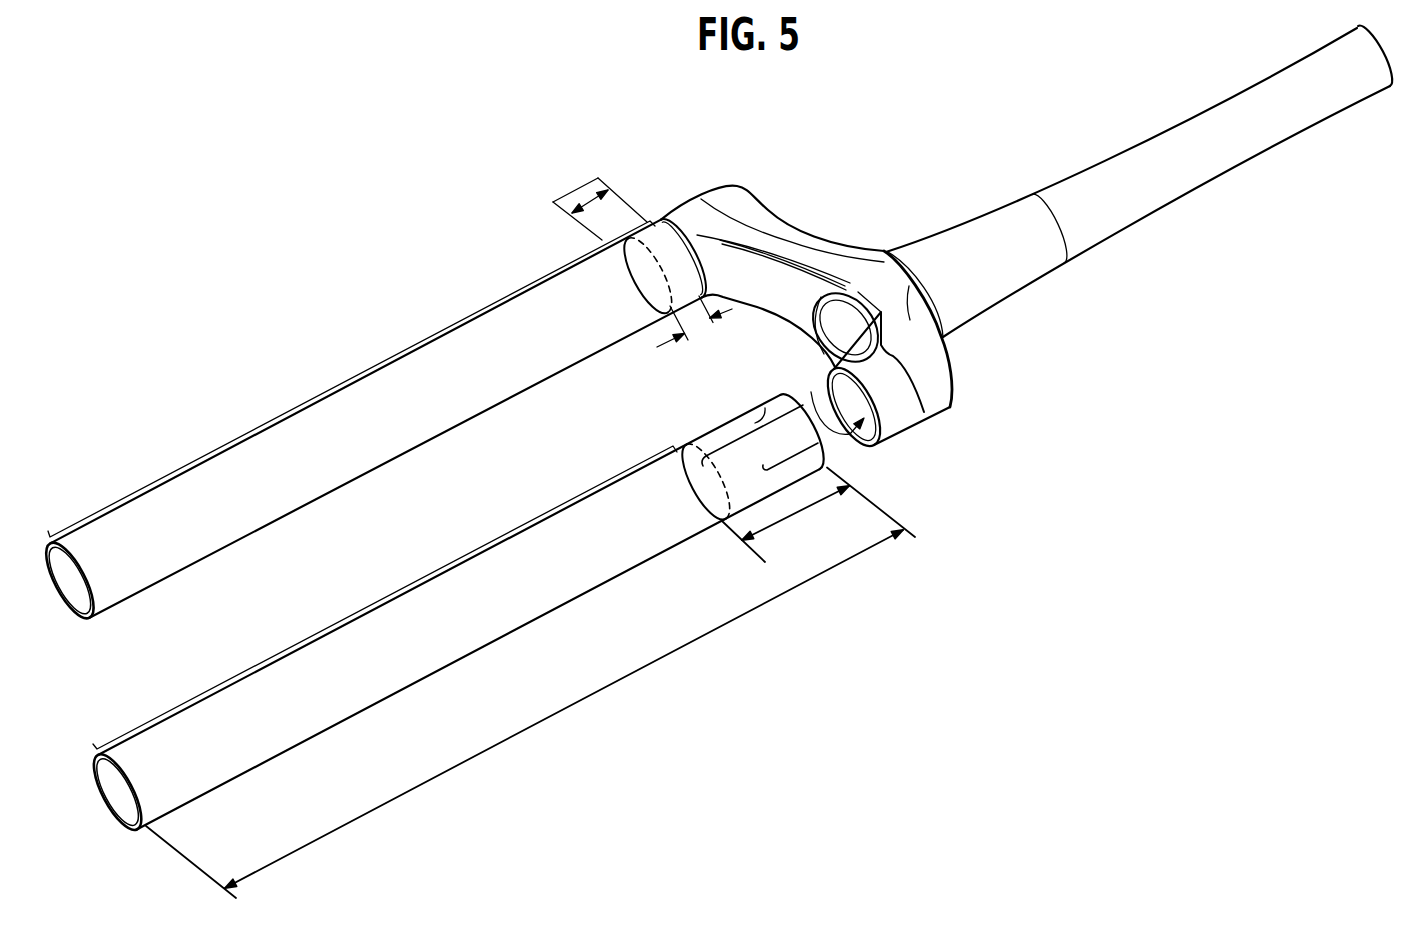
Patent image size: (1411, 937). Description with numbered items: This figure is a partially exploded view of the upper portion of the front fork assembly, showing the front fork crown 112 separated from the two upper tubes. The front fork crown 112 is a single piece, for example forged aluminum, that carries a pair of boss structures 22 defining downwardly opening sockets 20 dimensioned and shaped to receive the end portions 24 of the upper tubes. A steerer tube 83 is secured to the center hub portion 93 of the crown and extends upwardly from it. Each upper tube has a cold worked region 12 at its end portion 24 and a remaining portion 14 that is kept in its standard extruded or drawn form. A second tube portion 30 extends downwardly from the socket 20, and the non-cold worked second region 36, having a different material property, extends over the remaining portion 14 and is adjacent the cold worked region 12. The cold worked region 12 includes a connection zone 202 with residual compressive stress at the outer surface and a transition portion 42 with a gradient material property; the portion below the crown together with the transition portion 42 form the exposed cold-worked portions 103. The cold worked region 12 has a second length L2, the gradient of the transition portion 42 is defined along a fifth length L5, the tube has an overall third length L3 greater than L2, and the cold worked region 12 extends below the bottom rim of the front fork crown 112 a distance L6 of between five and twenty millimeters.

The cold worked region 12 is at (829, 400).
The remaining portion 14 is at (459, 612).
The socket 20 is at (838, 327).
The boss structure 22 is at (690, 214).
The end portion 24 is at (722, 445).
The second tube portion 30 is at (352, 378).
The second region 36 is at (378, 601).
The transition portion 42 is at (672, 448).
The steerer tube 83 is at (1098, 228).
The center hub portion 93 is at (877, 262).
The exposed cold-worked portions 103 is at (577, 189).
The front fork crown 112 is at (948, 387).
The connection zone 202 is at (760, 416).
The second length L2 is at (788, 516).
The third length L3 is at (690, 643).
The fifth length L5 is at (703, 333).
The distance L6 is at (593, 200).